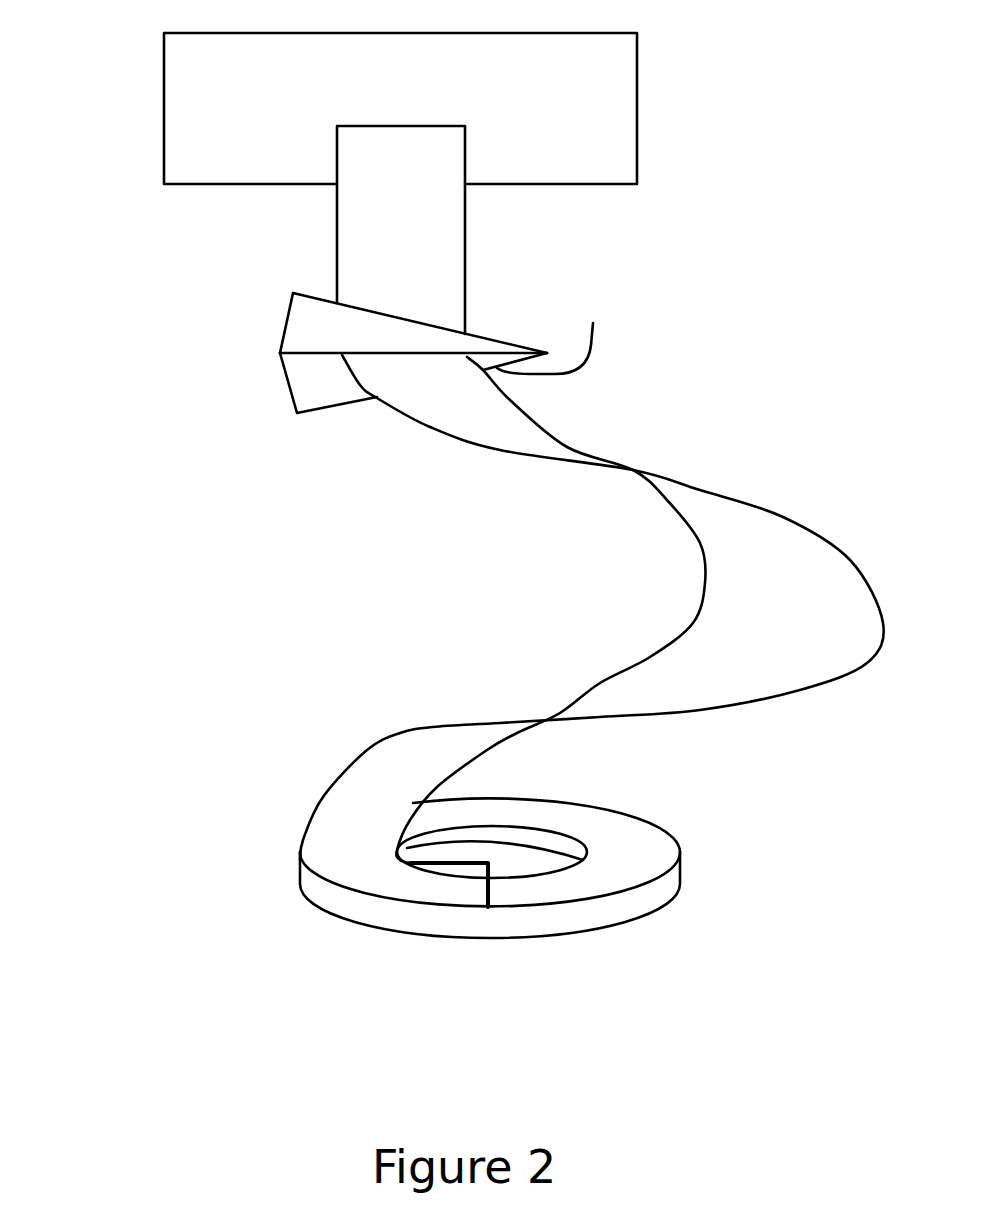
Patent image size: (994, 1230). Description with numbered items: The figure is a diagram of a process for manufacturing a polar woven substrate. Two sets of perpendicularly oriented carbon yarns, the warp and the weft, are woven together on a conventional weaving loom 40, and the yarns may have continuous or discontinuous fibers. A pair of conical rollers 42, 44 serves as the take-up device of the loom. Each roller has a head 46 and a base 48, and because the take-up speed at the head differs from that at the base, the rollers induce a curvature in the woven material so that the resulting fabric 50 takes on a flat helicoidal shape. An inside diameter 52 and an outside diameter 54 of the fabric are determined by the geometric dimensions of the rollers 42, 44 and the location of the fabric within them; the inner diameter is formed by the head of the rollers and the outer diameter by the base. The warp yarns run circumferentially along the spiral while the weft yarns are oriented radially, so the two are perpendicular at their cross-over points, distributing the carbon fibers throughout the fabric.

The weaving loom 40 is at (180, 111).
The conical roller 42 is at (310, 323).
The conical roller 44 is at (310, 385).
The head 46 is at (497, 338).
The base 48 is at (293, 338).
The fabric 50 is at (497, 402).
The inside diameter 52 is at (450, 868).
The outside diameter 54 is at (494, 902).